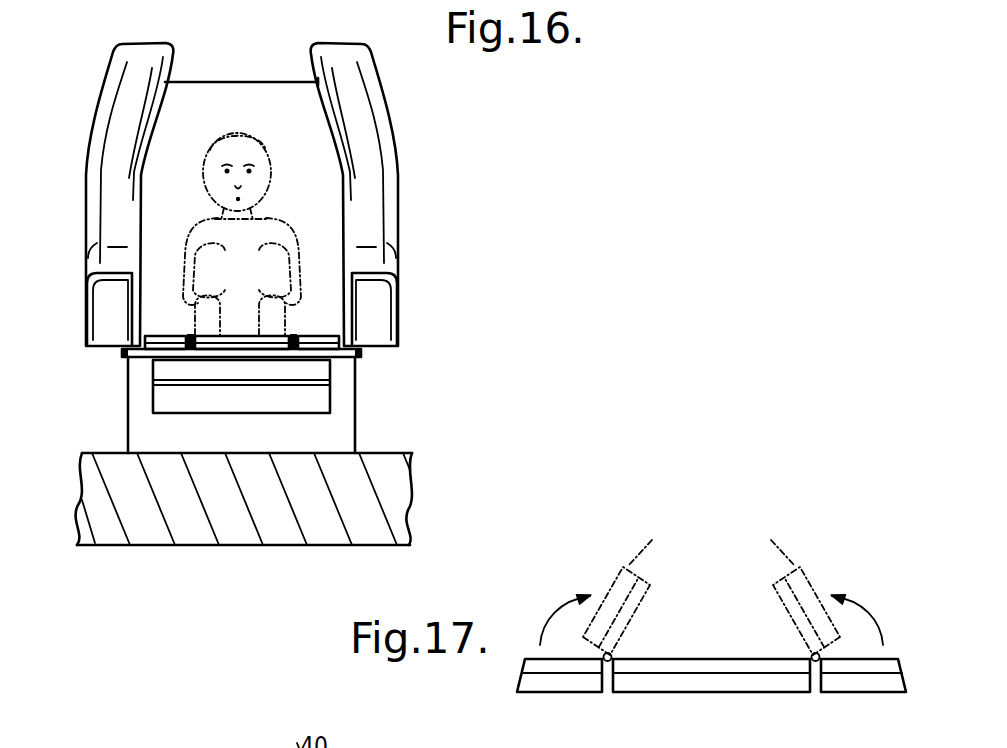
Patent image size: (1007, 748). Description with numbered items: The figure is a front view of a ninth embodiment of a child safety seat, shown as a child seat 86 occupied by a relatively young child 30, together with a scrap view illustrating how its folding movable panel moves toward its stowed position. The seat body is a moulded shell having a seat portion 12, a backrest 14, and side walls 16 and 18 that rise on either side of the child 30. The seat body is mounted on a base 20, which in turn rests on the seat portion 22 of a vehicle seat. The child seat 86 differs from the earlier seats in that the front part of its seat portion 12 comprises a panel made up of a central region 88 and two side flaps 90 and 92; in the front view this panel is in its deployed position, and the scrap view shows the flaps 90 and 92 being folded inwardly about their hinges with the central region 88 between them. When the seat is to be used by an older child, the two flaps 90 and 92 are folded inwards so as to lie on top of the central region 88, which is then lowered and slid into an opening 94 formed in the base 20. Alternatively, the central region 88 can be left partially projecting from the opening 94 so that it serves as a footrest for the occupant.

In FIG. 16, the seat portion 12 is at (160, 361).
In FIG. 16, the backrest 14 is at (203, 88).
In FIG. 16, the side wall 16 is at (95, 181).
In FIG. 16, the side wall 18 is at (386, 182).
In FIG. 16, the base 20 is at (356, 428).
In FIG. 16, the seat portion of a vehicle seat 22 is at (412, 497).
In FIG. 16, the young child 30 is at (269, 182).
In FIG. 16, the child seat 86 is at (293, 83).
In FIG. 16, the central region 88 is at (240, 362).
In FIG. 17, the central region 88 is at (711, 663).
In FIG. 16, the side flap 90 is at (162, 334).
In FIG. 17, the side flap 90 is at (555, 683).
In FIG. 16, the side flap 92 is at (320, 338).
In FIG. 17, the side flap 92 is at (866, 684).
In FIG. 16, the opening 94 is at (323, 395).